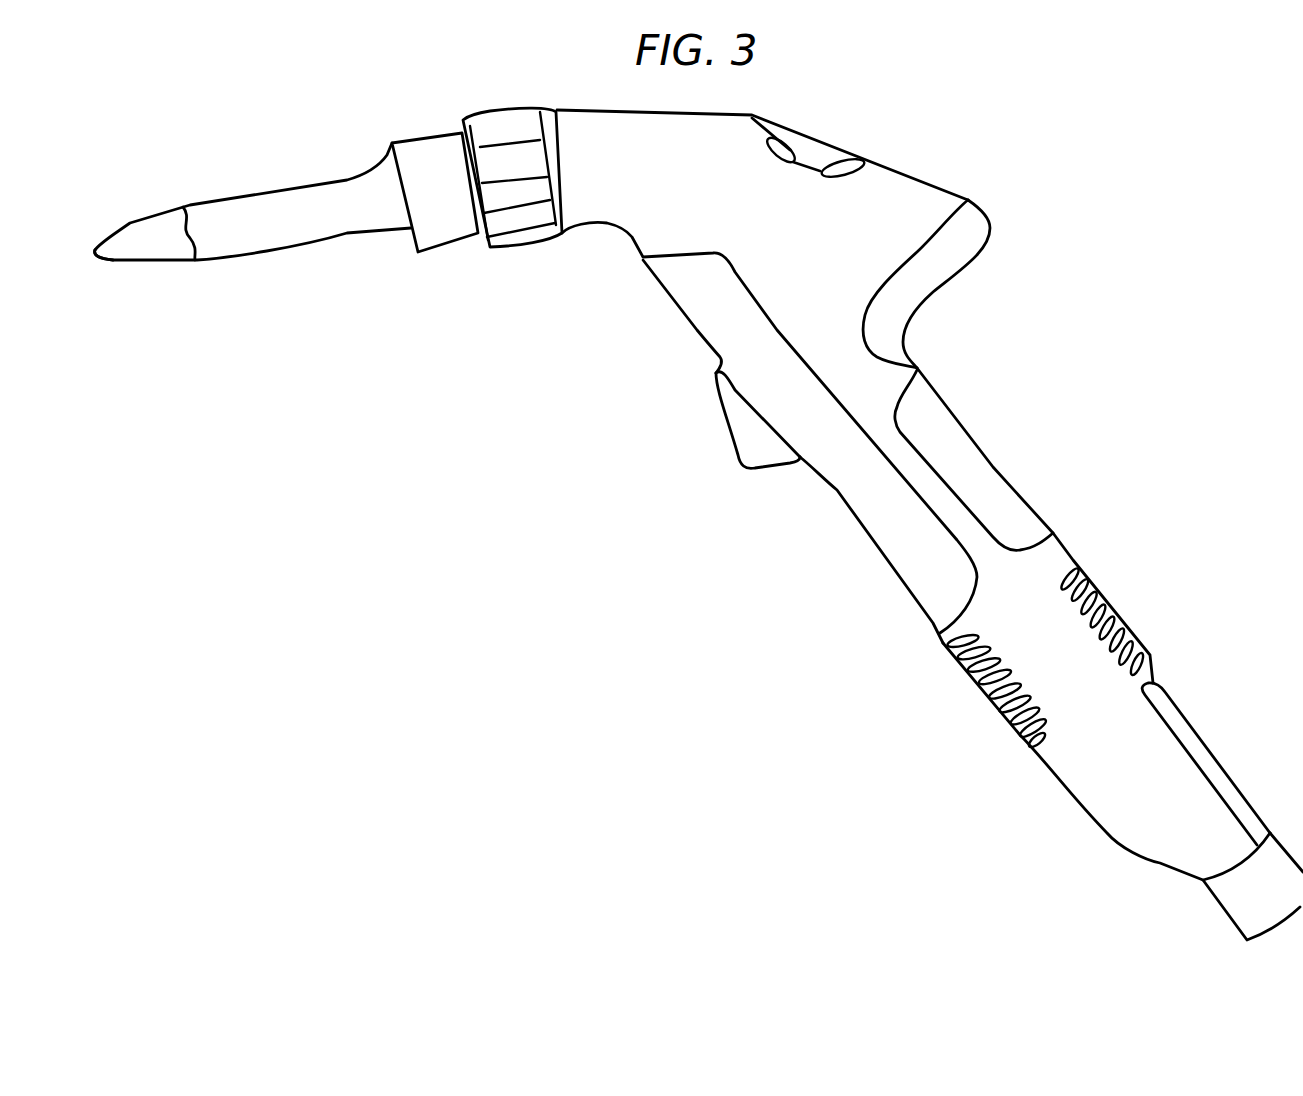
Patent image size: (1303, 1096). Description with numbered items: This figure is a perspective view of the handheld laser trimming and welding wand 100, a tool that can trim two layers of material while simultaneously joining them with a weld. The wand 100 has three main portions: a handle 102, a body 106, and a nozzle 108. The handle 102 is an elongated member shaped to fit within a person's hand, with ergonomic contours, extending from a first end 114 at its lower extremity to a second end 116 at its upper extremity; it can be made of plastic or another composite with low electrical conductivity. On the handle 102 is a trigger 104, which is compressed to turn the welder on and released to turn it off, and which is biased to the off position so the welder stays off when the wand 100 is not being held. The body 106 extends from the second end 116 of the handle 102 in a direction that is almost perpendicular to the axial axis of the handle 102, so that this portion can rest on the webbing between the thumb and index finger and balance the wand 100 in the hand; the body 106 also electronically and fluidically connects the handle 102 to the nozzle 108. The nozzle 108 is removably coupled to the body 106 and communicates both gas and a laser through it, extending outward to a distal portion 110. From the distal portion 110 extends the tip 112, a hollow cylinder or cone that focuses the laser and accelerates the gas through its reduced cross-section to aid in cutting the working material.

The handheld laser trimming and welding wand 100 is at (1108, 215).
The handle 102 is at (973, 473).
The trigger 104 is at (750, 438).
The body 106 is at (813, 207).
The nozzle 108 is at (327, 200).
The distal portion 110 is at (198, 232).
The tip 112 is at (148, 252).
The first end 114 is at (1243, 933).
The second end 116 is at (907, 328).